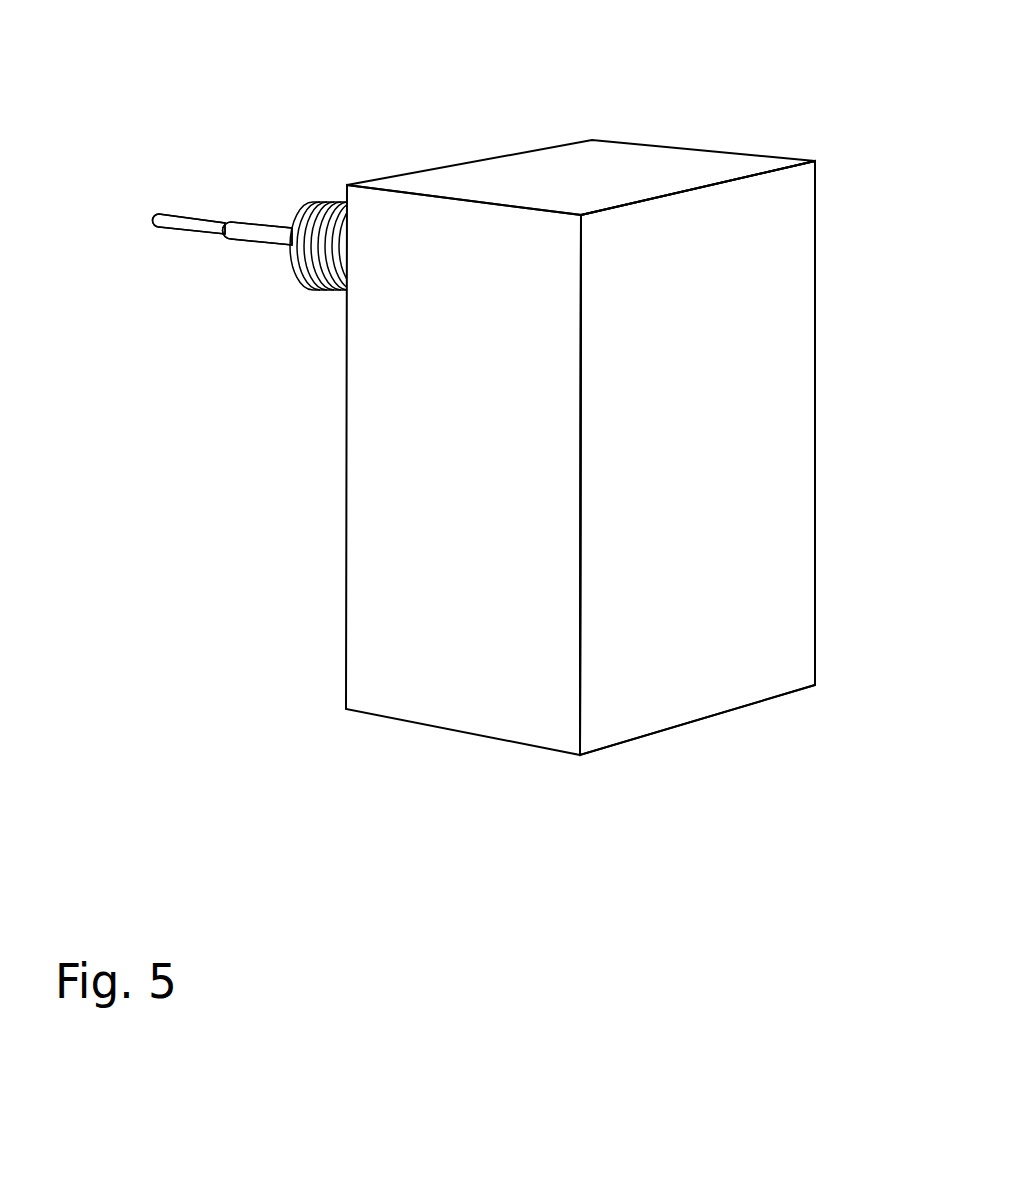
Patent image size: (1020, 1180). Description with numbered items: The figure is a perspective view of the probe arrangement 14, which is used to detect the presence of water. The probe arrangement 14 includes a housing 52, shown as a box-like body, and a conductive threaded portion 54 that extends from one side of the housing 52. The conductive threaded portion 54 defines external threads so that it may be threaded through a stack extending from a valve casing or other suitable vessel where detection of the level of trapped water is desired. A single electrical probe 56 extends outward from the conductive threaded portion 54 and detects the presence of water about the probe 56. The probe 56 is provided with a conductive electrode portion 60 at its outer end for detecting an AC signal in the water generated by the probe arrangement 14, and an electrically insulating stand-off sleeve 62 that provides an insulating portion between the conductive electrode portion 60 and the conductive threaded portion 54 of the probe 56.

The probe arrangement 14 is at (771, 96).
The housing 52 is at (816, 391).
The conductive threaded portion 54 is at (318, 293).
The electrical probe 56 is at (201, 307).
The conductive electrode portion 60 is at (160, 213).
The electrically insulating stand-off sleeve 62 is at (241, 221).